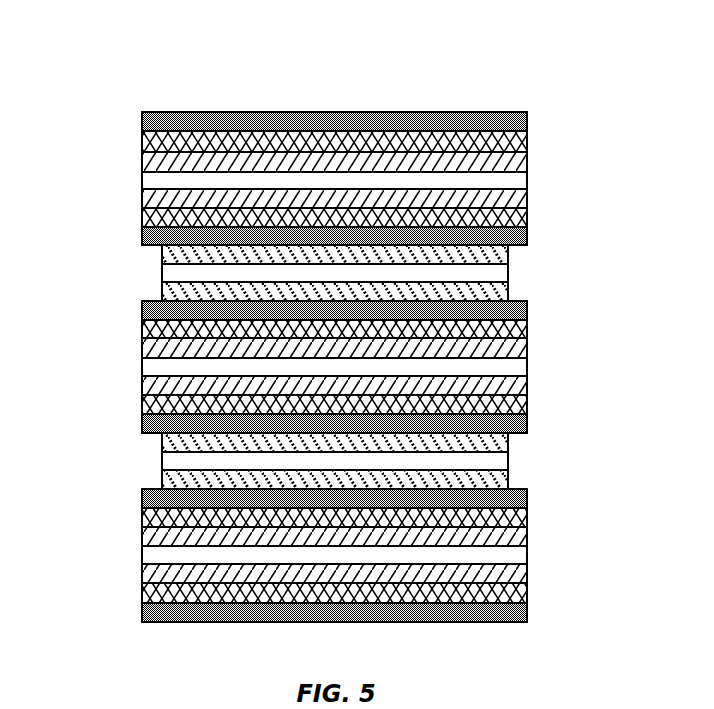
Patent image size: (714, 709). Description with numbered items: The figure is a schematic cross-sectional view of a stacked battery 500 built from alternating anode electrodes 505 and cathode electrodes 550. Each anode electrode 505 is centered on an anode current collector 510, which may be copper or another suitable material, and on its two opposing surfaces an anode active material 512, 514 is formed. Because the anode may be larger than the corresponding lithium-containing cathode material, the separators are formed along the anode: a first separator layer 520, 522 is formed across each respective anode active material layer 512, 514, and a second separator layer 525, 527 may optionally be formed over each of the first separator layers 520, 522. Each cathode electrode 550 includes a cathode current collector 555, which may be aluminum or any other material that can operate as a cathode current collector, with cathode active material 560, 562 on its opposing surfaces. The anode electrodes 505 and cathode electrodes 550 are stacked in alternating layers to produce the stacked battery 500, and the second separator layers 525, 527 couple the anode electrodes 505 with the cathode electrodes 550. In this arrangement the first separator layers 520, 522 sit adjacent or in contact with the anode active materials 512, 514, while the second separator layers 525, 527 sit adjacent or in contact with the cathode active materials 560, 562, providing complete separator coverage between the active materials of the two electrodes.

The stacked battery 500 is at (90, 130).
The anode electrode 505 is at (400, 112).
The second separator layer 525 is at (528, 122).
The first separator layer 520 is at (528, 141).
The anode active material 512 is at (141, 158).
The anode current collector 510 is at (528, 178).
The anode active material 514 is at (141, 198).
The first separator layer 522 is at (528, 217).
The second separator layer 527 is at (528, 243).
The cathode current collector 555 is at (509, 461).
The cathode active material 560 is at (161, 439).
The cathode electrode 550 is at (161, 467).
The cathode active material 562 is at (161, 478).